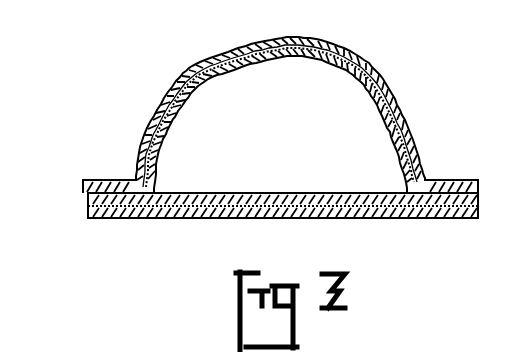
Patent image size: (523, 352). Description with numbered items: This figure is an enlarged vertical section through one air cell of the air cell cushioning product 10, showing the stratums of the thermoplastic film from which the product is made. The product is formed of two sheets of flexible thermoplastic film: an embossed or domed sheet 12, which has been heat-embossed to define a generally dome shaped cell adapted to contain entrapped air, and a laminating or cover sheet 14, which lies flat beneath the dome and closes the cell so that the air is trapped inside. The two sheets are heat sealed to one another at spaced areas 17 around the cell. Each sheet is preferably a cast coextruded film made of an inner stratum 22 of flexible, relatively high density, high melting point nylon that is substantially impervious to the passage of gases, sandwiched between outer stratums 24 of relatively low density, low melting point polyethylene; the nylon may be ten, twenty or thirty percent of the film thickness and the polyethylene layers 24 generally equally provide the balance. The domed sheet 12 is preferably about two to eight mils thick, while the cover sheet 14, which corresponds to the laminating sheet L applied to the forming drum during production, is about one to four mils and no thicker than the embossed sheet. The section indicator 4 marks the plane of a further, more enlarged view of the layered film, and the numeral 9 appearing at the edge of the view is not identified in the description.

The section line 4- 4 is at (387, 33).
The adjacent element 9 is at (518, 220).
The air cell cushioning product 10 is at (433, 141).
The embossed or domed sheet 12 is at (426, 168).
The laminating or cover sheet 14 is at (458, 222).
The spaced areas 17 is at (120, 183).
The inner stratum 22 is at (401, 114).
The outer stratums 24 is at (172, 81).
The laminating or cover sheet L is at (308, 217).